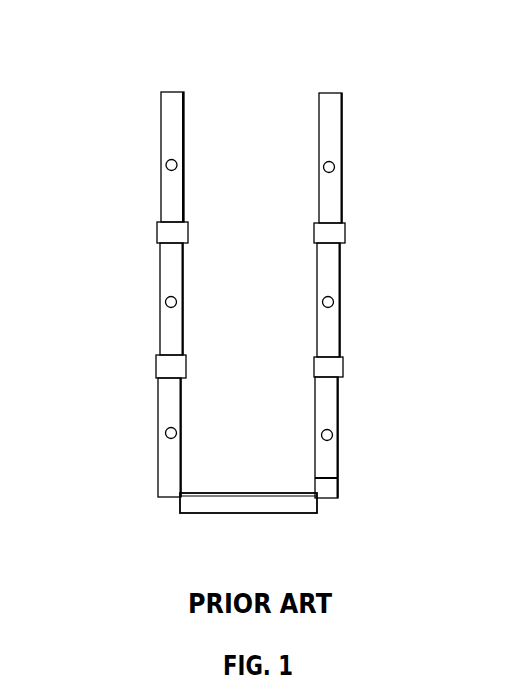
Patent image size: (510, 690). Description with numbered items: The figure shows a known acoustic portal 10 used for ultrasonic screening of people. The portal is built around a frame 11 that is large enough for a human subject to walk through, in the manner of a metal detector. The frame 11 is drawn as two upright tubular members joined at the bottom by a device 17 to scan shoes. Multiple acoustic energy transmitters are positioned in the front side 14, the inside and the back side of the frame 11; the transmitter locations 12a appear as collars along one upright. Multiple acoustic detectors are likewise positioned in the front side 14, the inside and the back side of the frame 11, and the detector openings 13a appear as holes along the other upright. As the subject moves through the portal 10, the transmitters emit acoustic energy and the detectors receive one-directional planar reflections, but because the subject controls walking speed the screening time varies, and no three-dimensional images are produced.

The acoustic portal 10 is at (209, 86).
The front side 14 is at (166, 201).
The connecting collars 12a is at (157, 236).
The frame 11 is at (166, 459).
The holes 13a is at (336, 305).
The device to scan shoes 17 is at (317, 506).